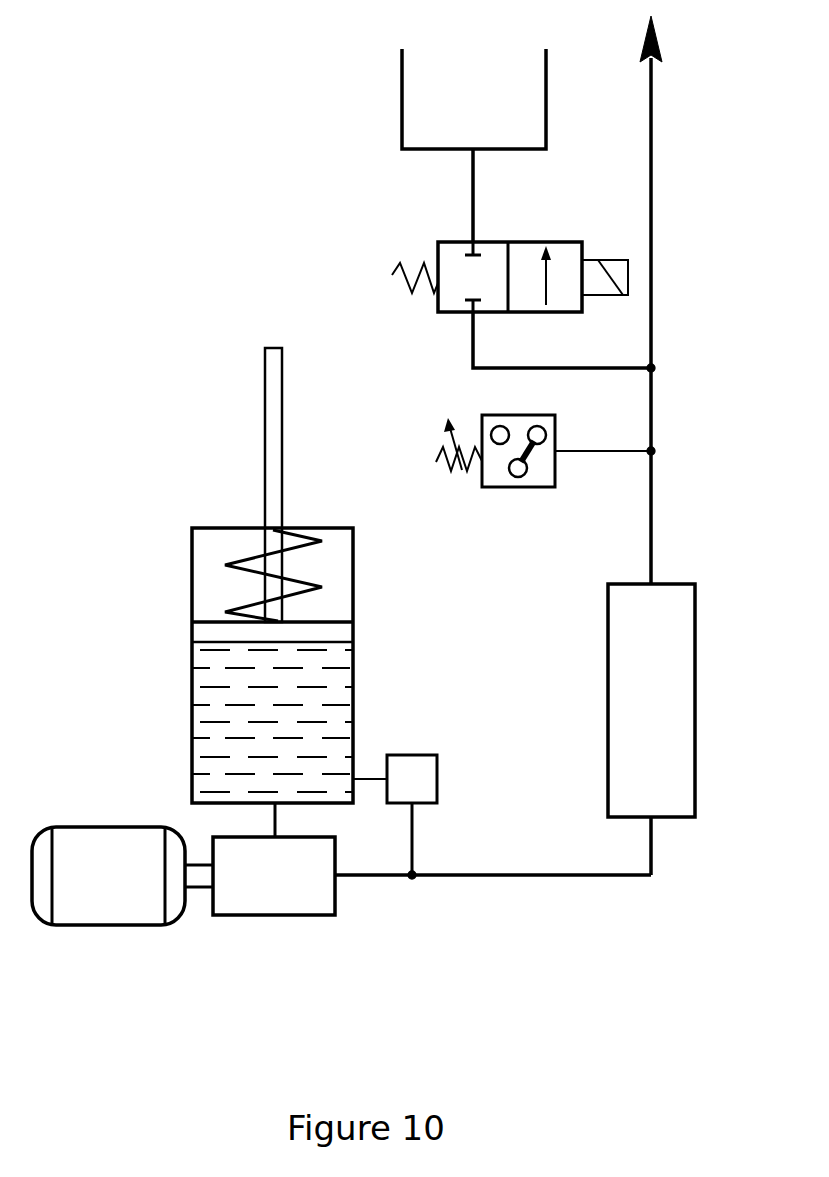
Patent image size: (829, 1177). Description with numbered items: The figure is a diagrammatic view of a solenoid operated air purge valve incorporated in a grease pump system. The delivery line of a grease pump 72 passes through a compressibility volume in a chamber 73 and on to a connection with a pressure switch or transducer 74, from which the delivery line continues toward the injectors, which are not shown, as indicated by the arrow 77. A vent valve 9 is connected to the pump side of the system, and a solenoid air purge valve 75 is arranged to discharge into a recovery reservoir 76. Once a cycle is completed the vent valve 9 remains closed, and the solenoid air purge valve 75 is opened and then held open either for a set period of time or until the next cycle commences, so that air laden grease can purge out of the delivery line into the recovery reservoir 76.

The vent valve 9 is at (418, 780).
The grease pump 72 is at (312, 892).
The chamber 73 is at (615, 665).
The pressure switch or transducer 74 is at (518, 487).
The solenoid air purge valve 75 is at (438, 312).
The recovery reservoir 76 is at (410, 122).
The arrow 77 is at (660, 36).